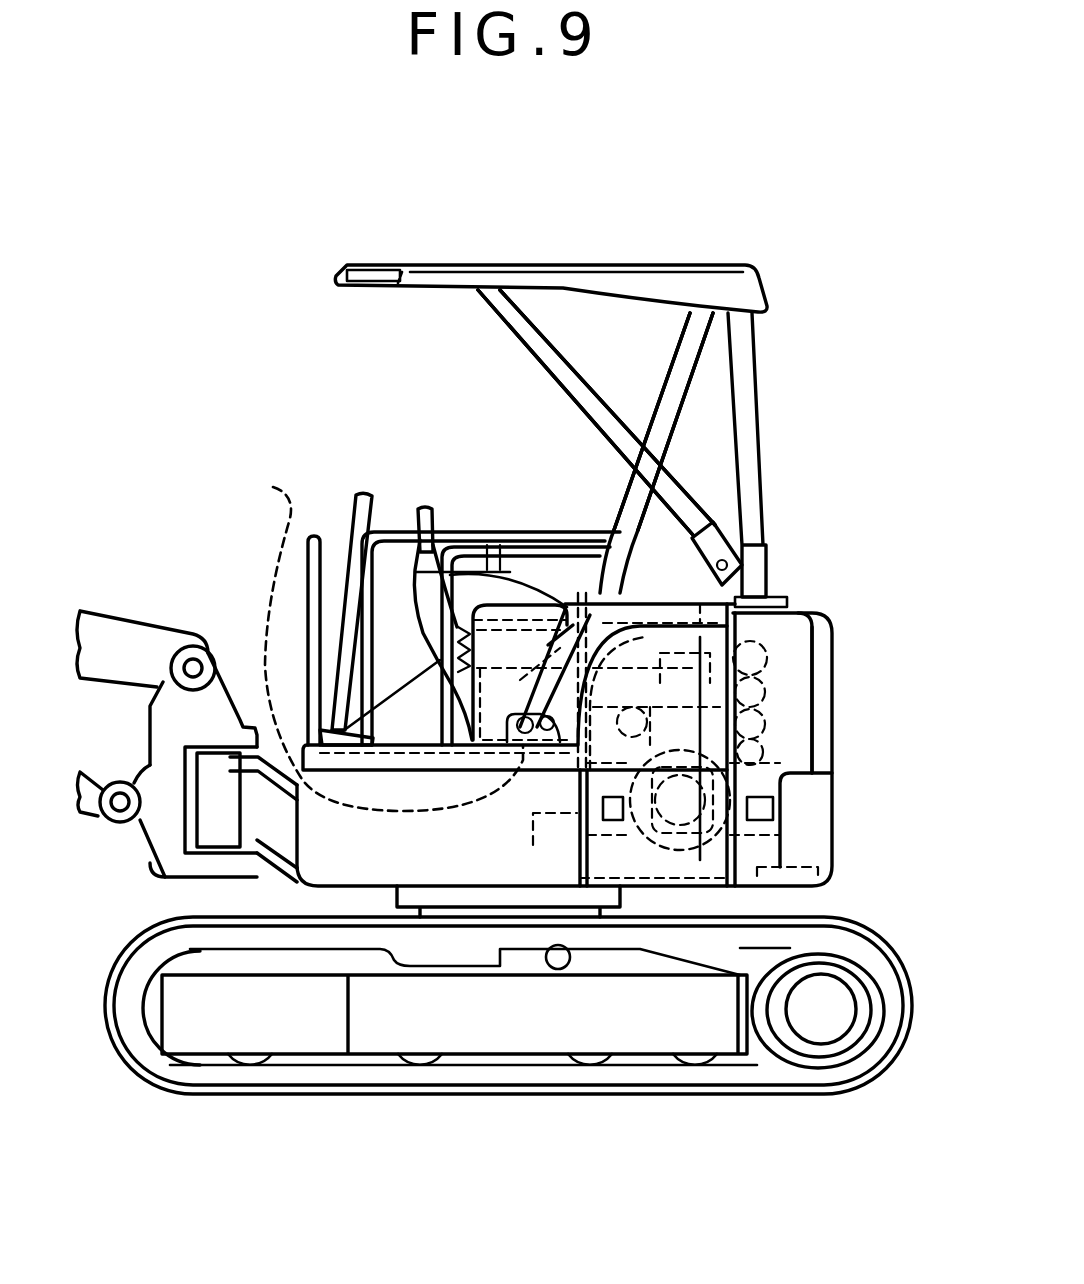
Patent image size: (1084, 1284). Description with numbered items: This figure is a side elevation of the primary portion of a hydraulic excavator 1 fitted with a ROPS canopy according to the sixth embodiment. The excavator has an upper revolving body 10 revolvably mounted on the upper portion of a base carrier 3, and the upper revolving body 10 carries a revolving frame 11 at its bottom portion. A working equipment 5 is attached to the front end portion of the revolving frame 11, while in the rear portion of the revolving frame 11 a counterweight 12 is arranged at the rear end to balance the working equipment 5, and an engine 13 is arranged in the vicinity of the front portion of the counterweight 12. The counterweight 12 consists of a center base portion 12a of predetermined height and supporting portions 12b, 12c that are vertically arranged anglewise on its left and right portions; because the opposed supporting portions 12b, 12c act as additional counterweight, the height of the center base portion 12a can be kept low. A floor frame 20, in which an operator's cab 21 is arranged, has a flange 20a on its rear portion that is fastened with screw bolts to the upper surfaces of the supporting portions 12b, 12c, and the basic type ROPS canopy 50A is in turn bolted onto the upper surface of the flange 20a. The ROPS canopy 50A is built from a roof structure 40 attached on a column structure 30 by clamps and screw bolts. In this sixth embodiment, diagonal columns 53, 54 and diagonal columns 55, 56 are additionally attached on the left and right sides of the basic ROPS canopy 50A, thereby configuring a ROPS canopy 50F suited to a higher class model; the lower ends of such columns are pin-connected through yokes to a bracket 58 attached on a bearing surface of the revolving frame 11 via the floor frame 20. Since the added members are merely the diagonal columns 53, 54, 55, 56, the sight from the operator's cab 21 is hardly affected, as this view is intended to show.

The hydraulic excavator 1 is at (127, 246).
The base carrier 3 is at (220, 1100).
The working equipment 5 is at (132, 620).
The upper revolving body 10 is at (823, 352).
The revolving frame 11 is at (810, 872).
The counterweight 12 is at (928, 752).
The center base portion 12a is at (823, 790).
The supporting portion 12b is at (785, 697).
The supporting portion 12c is at (857, 700).
The engine 13 is at (653, 853).
The floor frame 20 is at (524, 603).
The flange 20a is at (787, 595).
The operator's cab 21 is at (563, 477).
The column structure 30 is at (727, 358).
The roof structure 40 is at (450, 256).
The ROPS canopy 50A is at (298, 205).
The ROPS canopy 50F is at (207, 498).
The diagonal column 53 is at (680, 377).
The diagonal column 54 is at (465, 421).
The diagonal column 55 is at (560, 370).
The diagonal column 56 is at (466, 412).
The bracket 58 is at (373, 642).